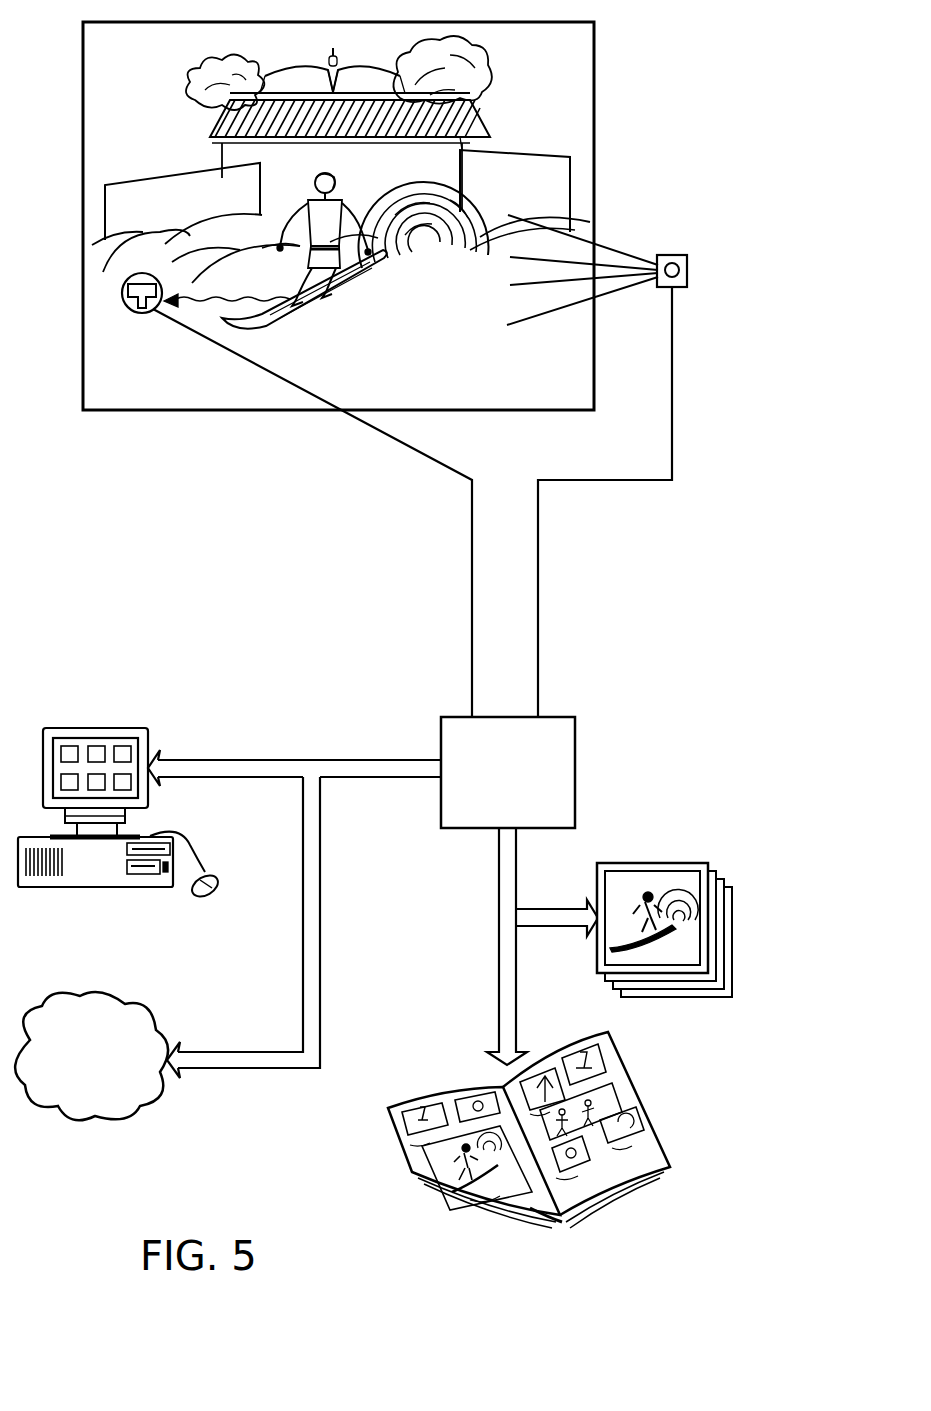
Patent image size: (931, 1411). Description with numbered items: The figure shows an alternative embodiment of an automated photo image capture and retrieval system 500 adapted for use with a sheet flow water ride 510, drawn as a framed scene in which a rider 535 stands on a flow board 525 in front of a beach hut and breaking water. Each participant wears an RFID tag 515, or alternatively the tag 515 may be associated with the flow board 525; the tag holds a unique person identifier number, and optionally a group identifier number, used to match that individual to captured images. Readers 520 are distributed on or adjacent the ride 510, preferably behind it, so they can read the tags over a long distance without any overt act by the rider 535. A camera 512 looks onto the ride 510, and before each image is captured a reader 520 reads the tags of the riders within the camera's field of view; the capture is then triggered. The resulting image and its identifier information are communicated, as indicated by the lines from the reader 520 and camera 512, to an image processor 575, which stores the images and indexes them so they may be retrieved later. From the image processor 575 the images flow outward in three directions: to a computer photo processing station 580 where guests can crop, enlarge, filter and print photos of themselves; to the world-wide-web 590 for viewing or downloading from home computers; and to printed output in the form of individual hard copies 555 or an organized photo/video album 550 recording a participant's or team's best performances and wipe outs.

The automated photo image capture and retrieval system 500 is at (692, 142).
The sheet flow water ride 510 is at (132, 257).
The camera 512 is at (690, 268).
The RFID tag 515 is at (342, 326).
The reader 520 is at (117, 333).
The flow board 525 is at (392, 292).
The rider 535 is at (280, 188).
The photo/video album 550 is at (388, 1166).
The individual hard copies 555 is at (727, 855).
The image processor 575 is at (441, 706).
The computer photo processing station 580 is at (102, 728).
The world-wide-web 590 is at (92, 999).